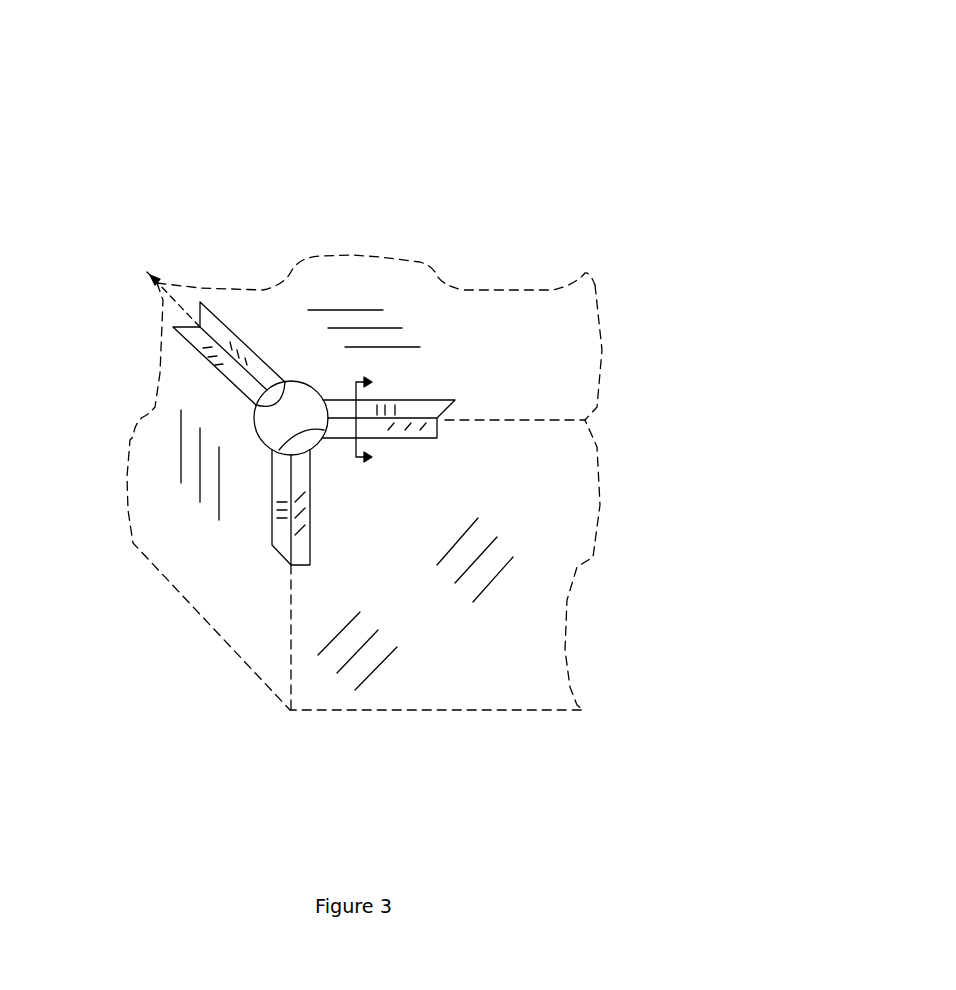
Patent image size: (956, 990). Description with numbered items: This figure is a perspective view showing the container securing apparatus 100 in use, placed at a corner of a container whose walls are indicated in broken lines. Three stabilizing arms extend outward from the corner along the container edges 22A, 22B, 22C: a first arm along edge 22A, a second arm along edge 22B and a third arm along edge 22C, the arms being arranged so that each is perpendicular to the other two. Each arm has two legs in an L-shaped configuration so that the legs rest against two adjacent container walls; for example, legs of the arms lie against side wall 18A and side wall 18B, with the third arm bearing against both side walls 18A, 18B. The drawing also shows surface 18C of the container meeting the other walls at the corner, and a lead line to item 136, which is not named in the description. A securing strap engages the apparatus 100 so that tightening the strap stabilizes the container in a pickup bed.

The sheet 136 is at (740, 7).
The container securing apparatus 100 is at (220, 393).
The side wall 18A is at (522, 645).
The side wall 18B is at (484, 310).
The third panel 18C is at (237, 583).
The edge 22A is at (528, 420).
The edge 22B is at (167, 298).
The edge 22C is at (290, 683).